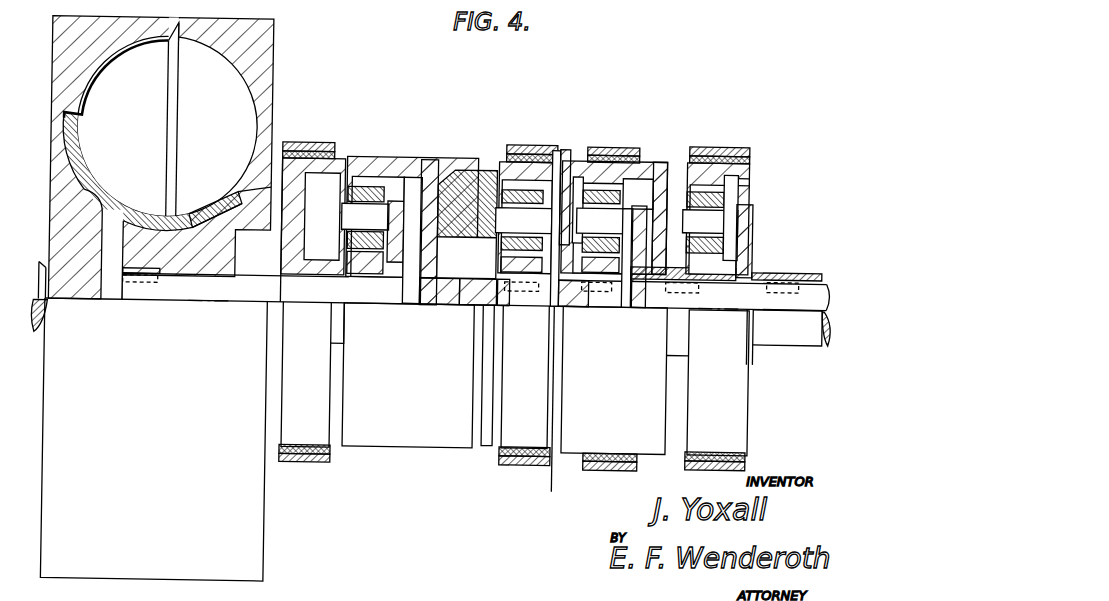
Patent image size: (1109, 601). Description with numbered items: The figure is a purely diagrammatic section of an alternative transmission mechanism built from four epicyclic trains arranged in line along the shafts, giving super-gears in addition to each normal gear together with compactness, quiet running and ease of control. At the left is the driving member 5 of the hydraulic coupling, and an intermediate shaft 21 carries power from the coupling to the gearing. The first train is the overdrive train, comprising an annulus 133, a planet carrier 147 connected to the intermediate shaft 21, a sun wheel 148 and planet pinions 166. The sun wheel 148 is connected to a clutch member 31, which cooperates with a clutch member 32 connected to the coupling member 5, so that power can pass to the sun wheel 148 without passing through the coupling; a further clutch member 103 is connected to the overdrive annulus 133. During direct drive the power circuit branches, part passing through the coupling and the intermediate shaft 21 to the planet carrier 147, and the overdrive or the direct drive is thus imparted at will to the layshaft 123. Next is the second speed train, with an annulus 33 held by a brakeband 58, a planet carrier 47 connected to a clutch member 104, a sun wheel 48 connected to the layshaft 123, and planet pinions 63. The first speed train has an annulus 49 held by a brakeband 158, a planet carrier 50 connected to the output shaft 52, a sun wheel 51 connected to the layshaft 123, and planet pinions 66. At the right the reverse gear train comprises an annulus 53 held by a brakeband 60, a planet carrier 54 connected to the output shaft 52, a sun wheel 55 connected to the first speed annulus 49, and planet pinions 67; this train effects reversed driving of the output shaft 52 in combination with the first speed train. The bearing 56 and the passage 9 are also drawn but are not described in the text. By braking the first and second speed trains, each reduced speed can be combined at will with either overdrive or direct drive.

The coupling member 5 is at (260, 151).
The passage 9 is at (138, 248).
The clutch member 32 is at (193, 226).
The intermediate shaft 21 is at (244, 290).
The planet pinions 166 is at (271, 396).
The bearing 56 is at (294, 146).
The clutch member 31 is at (312, 152).
The sun wheel 148 is at (346, 290).
The annulus 133 is at (364, 158).
The planet carrier 147 is at (422, 157).
The clutch member 103 is at (469, 157).
The layshaft 123 is at (441, 290).
The planet pinions 63 is at (474, 290).
The clutch member 104 is at (512, 156).
The sun wheel 48 is at (516, 282).
The annulus 33 is at (555, 148).
The planet carrier 47 is at (546, 284).
The brakeband 58 is at (547, 160).
The brakeband 158 is at (612, 142).
The annulus 49 is at (629, 162).
The planet carrier 50 is at (668, 168).
The sun wheel 51 is at (613, 282).
The planet pinions 66 is at (596, 278).
The brakeband 60 is at (736, 142).
The annulus 53 is at (720, 168).
The planet pinions 67 is at (728, 239).
The planet carrier 54 is at (753, 218).
The sun wheel 55 is at (729, 274).
The output shaft 52 is at (829, 337).